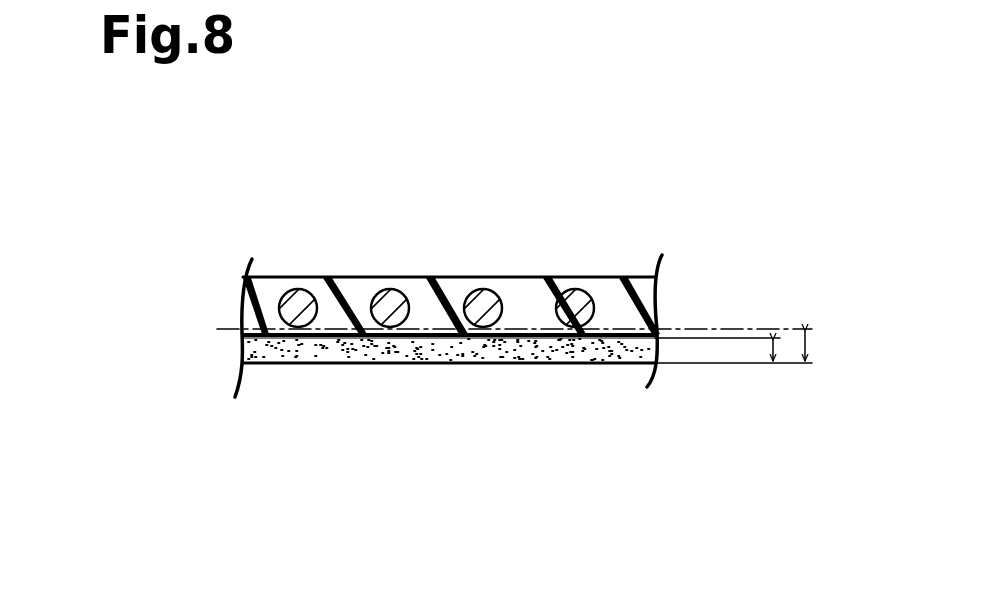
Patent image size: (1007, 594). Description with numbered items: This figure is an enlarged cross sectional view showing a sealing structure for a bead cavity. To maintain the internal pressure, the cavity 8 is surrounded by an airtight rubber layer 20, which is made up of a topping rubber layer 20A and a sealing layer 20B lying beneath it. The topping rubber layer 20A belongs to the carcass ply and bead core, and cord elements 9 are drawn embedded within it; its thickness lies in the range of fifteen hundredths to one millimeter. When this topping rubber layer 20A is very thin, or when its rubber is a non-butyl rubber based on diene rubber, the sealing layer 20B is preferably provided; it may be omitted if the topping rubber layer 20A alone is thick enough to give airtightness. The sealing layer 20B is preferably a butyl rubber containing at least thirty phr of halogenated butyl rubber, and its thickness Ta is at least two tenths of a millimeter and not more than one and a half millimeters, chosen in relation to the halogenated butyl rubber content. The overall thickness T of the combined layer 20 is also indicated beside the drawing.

The cavity 8 is at (430, 419).
The reinforcing cord 9 is at (605, 283).
The airtight rubber layer 20 is at (85, 293).
The topping rubber layer 20A is at (388, 260).
The sealing layer 20B is at (240, 353).
The thickness T is at (808, 342).
The thickness of the sealing layer Ta is at (770, 350).